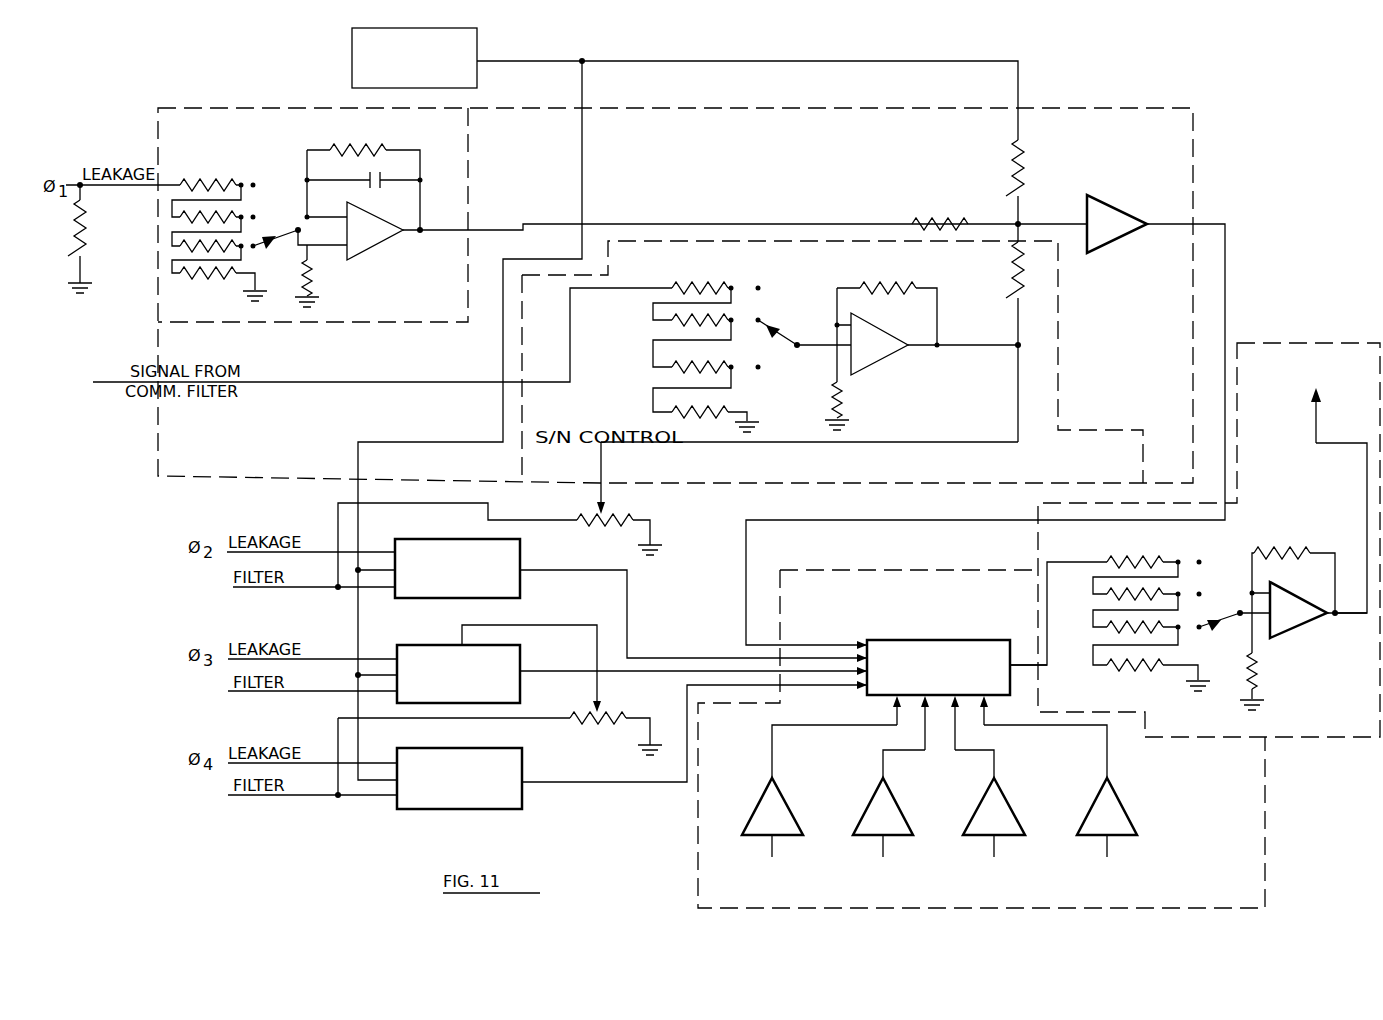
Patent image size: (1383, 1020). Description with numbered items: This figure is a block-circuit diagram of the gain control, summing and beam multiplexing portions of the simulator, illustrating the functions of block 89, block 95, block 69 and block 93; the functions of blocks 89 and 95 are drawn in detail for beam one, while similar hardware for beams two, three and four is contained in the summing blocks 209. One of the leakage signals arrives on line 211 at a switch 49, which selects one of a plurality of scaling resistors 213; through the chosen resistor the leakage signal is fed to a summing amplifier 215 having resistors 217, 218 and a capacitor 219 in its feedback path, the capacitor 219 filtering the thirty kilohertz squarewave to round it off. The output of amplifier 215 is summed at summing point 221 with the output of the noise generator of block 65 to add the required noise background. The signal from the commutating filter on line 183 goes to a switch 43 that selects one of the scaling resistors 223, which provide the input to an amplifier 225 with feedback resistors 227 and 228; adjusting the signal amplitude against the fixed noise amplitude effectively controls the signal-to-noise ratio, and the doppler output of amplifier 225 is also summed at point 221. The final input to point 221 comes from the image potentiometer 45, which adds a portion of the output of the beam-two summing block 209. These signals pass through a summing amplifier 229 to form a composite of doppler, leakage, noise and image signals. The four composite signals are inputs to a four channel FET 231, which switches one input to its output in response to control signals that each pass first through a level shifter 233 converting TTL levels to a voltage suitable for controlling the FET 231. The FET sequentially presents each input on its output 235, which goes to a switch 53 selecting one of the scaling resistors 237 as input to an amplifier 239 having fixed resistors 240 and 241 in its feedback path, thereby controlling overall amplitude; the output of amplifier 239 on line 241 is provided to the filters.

The noise generator block 65 is at (480, 40).
The summing blocks 209 is at (1133, 110).
The block 95 is at (470, 182).
The line 211 is at (113, 187).
The scaling resistors 213 is at (210, 206).
The switch 49 is at (291, 214).
The summing amplifier 215 is at (392, 244).
The resistor 217 is at (372, 144).
The capacitor 219 is at (370, 176).
The resistor 218 is at (302, 280).
The line 183 is at (447, 385).
The block 89 is at (1058, 362).
The scaling resistors 223 is at (692, 282).
The switch 43 is at (782, 352).
The amplifier 225 is at (893, 357).
The resistor 227 is at (882, 285).
The resistor 228 is at (850, 398).
The summing point 221 is at (1020, 220).
The summing amplifier 229 is at (1106, 195).
The image potentiometer 45 is at (622, 512).
The four channel FET 231 is at (945, 640).
The output 235 is at (1032, 660).
The level shifter 233 is at (756, 800).
The block 69 is at (1266, 840).
The block 93 is at (1305, 343).
The resistor / output line 241 is at (1318, 435).
The scaling resistors 237 is at (1120, 556).
The switch 53 is at (1222, 622).
The amplifier 239 is at (1276, 642).
The resistor 240 is at (1278, 565).